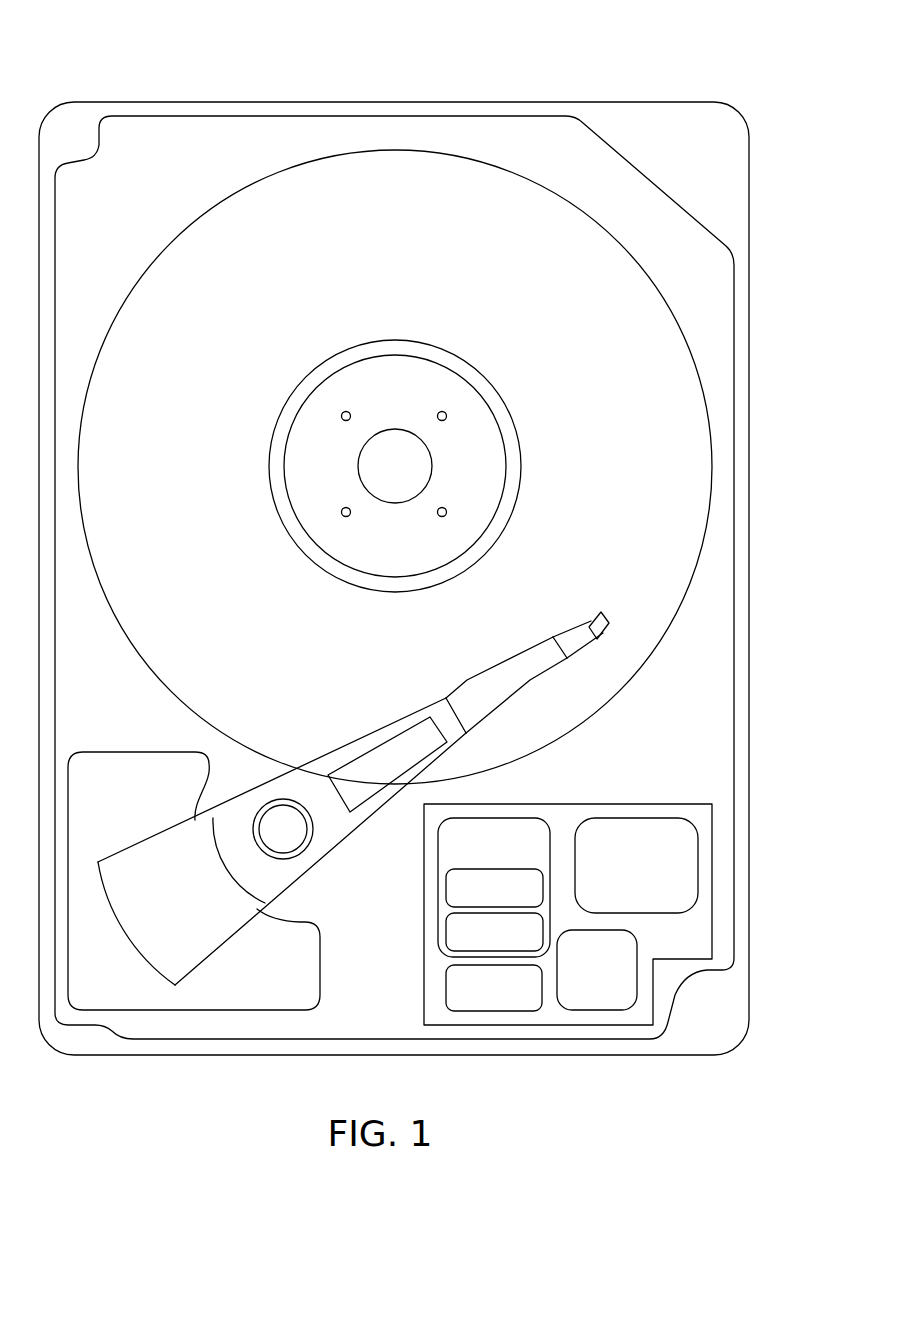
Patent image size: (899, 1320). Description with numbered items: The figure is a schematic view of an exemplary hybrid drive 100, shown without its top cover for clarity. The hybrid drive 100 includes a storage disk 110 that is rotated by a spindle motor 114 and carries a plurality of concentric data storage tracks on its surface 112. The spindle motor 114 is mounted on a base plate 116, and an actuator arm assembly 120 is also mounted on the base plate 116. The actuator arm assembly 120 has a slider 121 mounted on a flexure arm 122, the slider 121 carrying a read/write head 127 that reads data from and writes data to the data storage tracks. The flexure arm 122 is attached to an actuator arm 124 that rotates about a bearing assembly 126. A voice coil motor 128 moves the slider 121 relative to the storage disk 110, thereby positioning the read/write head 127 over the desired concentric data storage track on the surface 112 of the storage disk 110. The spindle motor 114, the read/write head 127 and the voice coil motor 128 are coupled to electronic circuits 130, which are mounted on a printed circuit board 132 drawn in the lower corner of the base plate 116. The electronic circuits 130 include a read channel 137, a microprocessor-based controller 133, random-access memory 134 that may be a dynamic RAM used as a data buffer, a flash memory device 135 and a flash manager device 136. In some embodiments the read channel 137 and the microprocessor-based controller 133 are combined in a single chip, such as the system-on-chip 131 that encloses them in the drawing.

The hybrid drive 100 is at (127, 60).
The storage disk 110 is at (170, 240).
The surface 112 is at (159, 446).
The spindle motor 114 is at (500, 403).
The base plate 116 is at (735, 605).
The actuator arm assembly 120 is at (364, 631).
The slider 121 is at (609, 617).
The flexure arm 122 is at (573, 626).
The actuator arm 124 is at (465, 680).
The bearing assembly 126 is at (324, 882).
The read/write head 127 is at (600, 582).
The voice coil motor 128 is at (320, 952).
The electronic circuits 130 is at (578, 802).
The system-on-chip 131 is at (472, 860).
The printed circuit board 132 is at (652, 803).
The microprocessor-based controller 133 is at (472, 901).
The random-access memory 134 is at (474, 999).
The flash memory device 135 is at (615, 880).
The flash manager device 136 is at (577, 983).
The read channel 137 is at (472, 945).